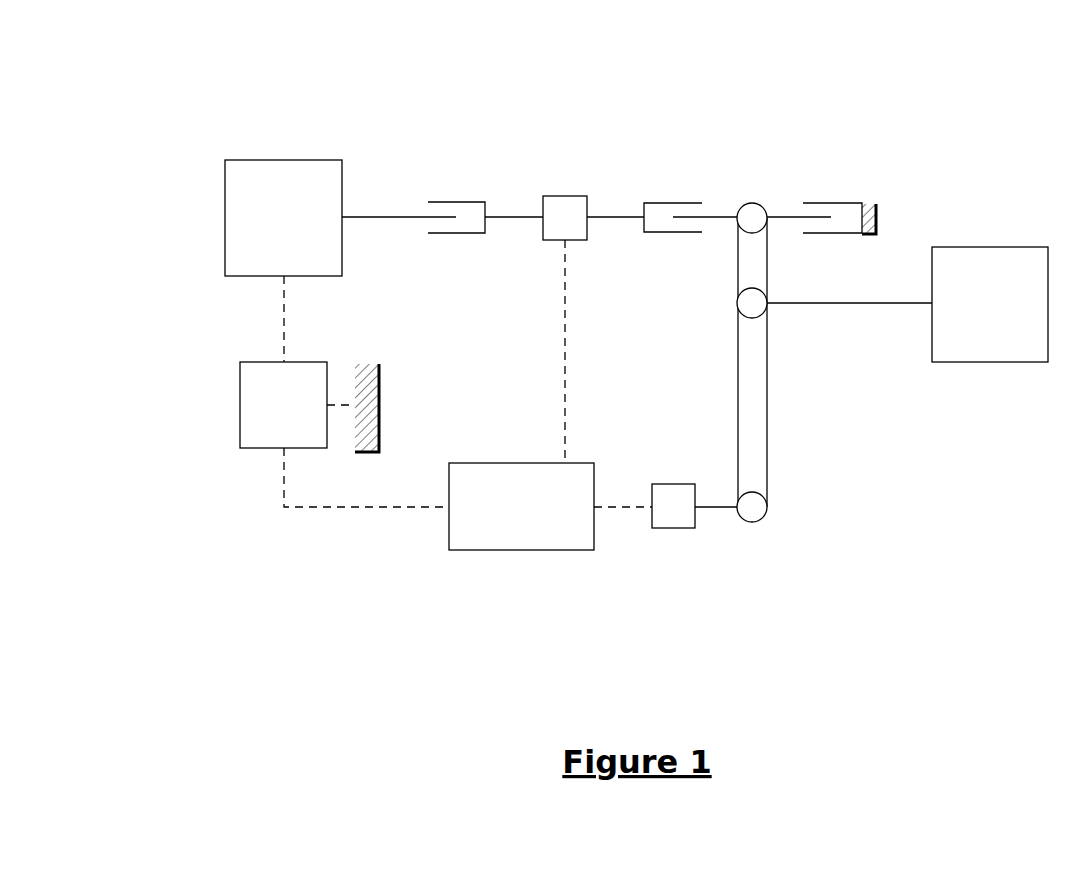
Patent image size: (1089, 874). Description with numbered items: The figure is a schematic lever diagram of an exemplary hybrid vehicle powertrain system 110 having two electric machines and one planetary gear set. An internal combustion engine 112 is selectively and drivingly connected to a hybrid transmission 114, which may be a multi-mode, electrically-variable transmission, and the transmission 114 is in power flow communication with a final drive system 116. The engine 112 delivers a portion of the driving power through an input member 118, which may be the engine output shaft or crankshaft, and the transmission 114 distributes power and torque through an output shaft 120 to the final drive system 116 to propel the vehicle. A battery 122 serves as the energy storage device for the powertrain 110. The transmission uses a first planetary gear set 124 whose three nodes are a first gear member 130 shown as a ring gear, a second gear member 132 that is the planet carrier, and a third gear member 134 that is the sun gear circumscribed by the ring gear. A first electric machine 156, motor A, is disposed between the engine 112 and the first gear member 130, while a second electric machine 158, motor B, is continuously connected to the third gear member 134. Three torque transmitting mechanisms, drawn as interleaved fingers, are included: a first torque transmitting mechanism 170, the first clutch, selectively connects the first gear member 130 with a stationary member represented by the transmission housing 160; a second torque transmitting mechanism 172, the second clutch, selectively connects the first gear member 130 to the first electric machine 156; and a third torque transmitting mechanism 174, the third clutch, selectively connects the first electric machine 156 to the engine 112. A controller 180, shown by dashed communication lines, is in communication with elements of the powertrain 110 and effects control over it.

The vehicle powertrain system 110 is at (345, 615).
The internal combustion engine 112 is at (292, 160).
The hybrid transmission 114 is at (628, 90).
The final drive system 116 is at (1005, 362).
The input member 118 is at (400, 218).
The output shaft 120 is at (818, 305).
The battery 122 is at (492, 463).
The first planetary gear set 124 is at (750, 135).
The first gear member 130 is at (752, 203).
The second gear member 132 is at (737, 305).
The third gear member 134 is at (752, 522).
The first electric machine 156 is at (565, 196).
The second electric machine 158 is at (673, 528).
The transmission housing 160 is at (868, 204).
The first torque transmitting mechanism 170 is at (830, 203).
The second torque transmitting mechanism 172 is at (673, 203).
The third torque transmitting mechanism 174 is at (456, 202).
The controller 180 is at (268, 448).